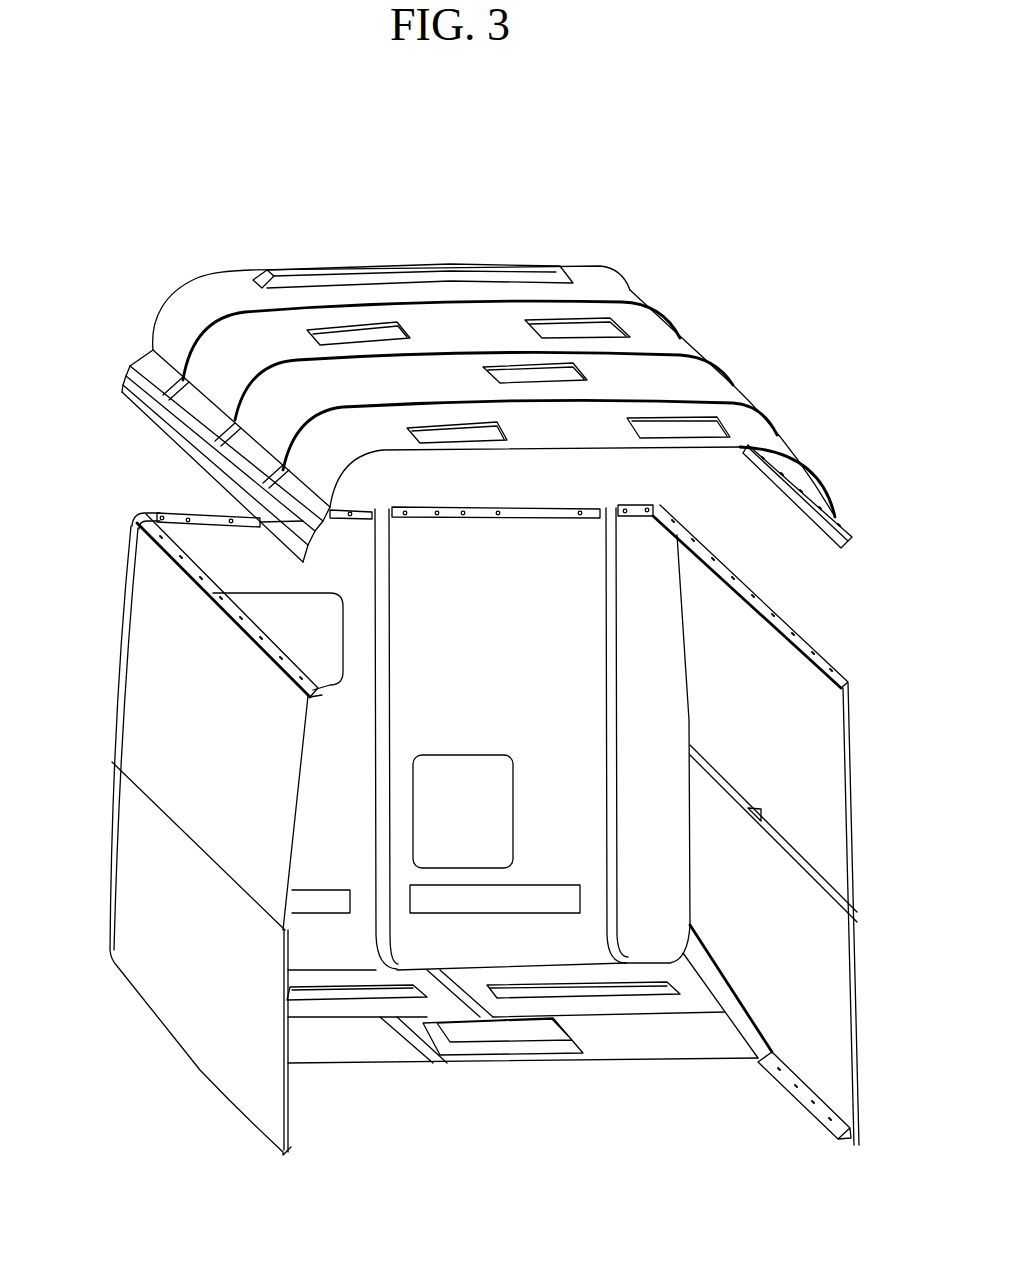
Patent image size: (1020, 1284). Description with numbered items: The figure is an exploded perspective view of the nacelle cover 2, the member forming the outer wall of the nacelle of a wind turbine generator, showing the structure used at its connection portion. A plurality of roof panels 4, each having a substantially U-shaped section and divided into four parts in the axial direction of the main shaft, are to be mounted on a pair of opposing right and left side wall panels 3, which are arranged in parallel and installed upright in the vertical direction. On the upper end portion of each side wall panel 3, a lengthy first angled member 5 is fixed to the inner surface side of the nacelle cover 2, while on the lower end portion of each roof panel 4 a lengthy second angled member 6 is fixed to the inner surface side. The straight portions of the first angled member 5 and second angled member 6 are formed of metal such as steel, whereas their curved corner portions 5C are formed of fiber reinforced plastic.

The nacelle cover 2 is at (501, 224).
The side wall panel 3 is at (150, 623).
The roof panel 4 is at (630, 291).
The first angled member 5 is at (361, 522).
The corner portion 5C is at (143, 513).
The second angled member 6 is at (313, 552).